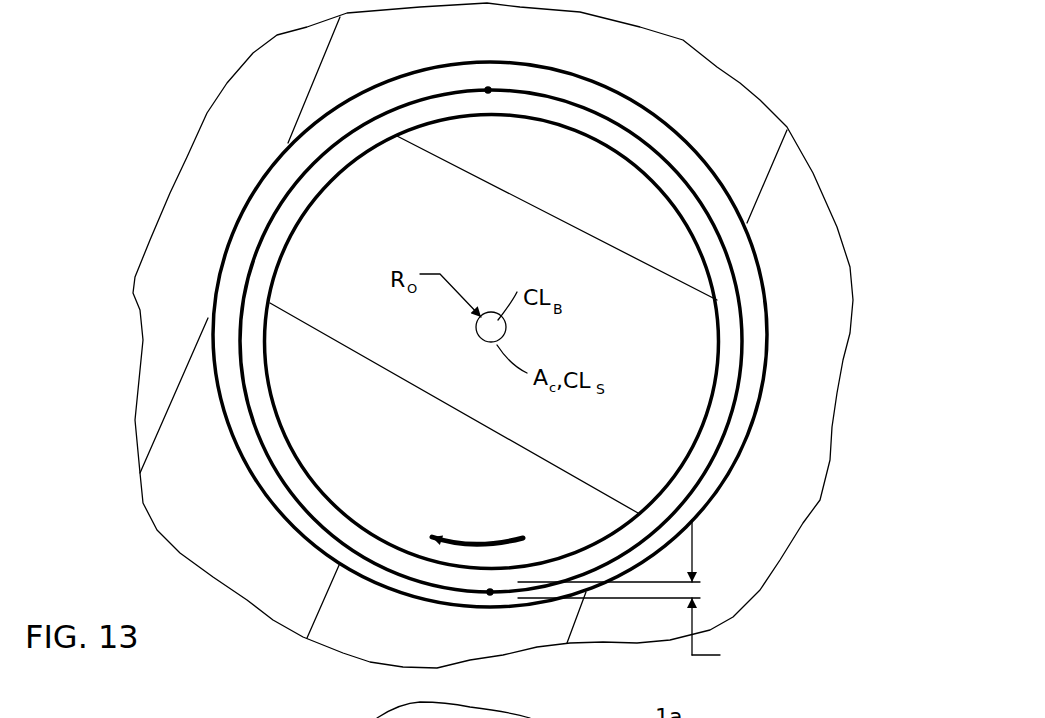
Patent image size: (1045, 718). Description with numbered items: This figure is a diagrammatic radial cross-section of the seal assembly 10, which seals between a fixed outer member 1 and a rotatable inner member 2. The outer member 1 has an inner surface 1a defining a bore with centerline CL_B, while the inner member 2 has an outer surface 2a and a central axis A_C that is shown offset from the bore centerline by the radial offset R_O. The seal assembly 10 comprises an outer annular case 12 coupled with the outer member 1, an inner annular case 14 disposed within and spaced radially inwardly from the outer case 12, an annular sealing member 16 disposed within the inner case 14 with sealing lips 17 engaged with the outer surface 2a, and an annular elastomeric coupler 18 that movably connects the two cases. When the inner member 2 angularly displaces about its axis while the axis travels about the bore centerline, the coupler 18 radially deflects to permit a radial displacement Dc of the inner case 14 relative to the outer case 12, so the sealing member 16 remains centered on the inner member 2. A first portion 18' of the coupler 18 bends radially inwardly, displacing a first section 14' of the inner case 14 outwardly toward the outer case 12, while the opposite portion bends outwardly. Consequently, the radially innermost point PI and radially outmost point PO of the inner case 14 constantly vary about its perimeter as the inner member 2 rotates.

The outer member 1 is at (797, 480).
The inner surface 1a is at (252, 472).
The inner member 2 is at (350, 517).
The outer surface 2a is at (386, 138).
The seal assembly 10 is at (208, 324).
The outer annular case 12 is at (670, 130).
The inner annular case 14 is at (553, 341).
The annular sealing member 16 is at (733, 358).
The sealing lip 17 is at (272, 422).
The annular elastomeric coupler 18 is at (826, 252).
The first section of the inner case 14' is at (384, 651).
The first portion of the coupler 18' is at (477, 651).
The radially outmost point PO is at (488, 90).
The radially innermost point PI is at (490, 592).
The radial displacement Dc is at (636, 598).